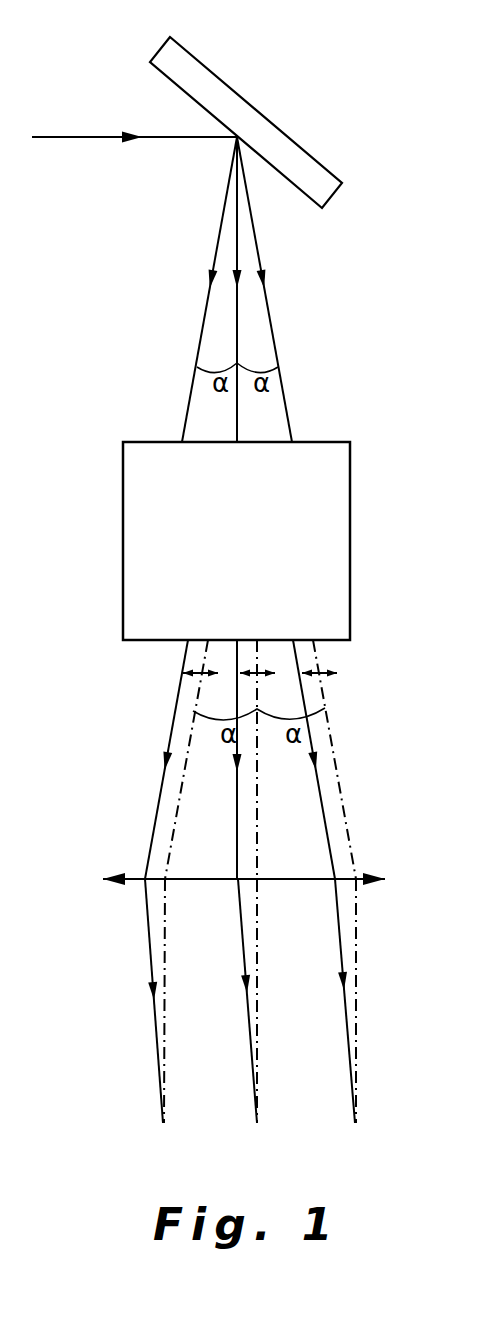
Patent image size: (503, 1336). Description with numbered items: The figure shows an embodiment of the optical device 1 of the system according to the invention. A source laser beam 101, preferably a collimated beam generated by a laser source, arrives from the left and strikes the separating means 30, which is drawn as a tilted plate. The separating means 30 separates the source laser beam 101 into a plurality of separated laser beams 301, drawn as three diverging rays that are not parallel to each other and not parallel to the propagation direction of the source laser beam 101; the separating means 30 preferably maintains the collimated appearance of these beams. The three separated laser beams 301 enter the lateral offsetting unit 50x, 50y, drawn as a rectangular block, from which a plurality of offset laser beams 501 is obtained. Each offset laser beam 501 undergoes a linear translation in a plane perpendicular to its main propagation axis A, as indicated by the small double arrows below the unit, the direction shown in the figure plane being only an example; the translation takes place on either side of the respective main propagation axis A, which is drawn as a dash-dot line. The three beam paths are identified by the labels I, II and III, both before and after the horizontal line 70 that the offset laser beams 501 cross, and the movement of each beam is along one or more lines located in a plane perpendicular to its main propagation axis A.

The optical device 1 is at (291, 101).
The separating means 30 is at (187, 65).
The source laser beam 101 is at (63, 135).
The separated laser beams 301 is at (211, 288).
The lateral offsetting unit 50x is at (306, 541).
The lateral offsetting unit 50y is at (350, 483).
The focal plane / image plane 70 is at (335, 879).
The offset laser beams 501 is at (152, 948).
The main propagation axis A is at (163, 1095).
The first beam path I is at (147, 1050).
The second beam path II is at (237, 1040).
The third beam path III is at (335, 1027).